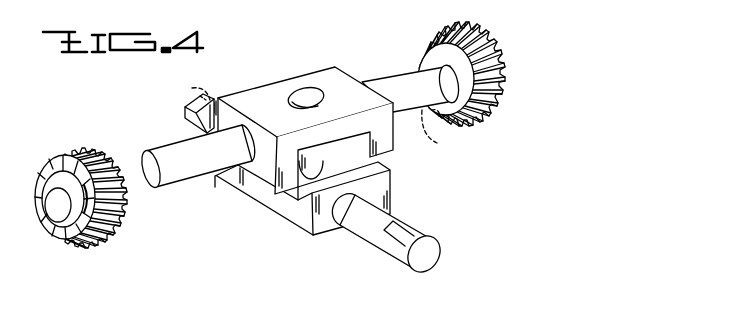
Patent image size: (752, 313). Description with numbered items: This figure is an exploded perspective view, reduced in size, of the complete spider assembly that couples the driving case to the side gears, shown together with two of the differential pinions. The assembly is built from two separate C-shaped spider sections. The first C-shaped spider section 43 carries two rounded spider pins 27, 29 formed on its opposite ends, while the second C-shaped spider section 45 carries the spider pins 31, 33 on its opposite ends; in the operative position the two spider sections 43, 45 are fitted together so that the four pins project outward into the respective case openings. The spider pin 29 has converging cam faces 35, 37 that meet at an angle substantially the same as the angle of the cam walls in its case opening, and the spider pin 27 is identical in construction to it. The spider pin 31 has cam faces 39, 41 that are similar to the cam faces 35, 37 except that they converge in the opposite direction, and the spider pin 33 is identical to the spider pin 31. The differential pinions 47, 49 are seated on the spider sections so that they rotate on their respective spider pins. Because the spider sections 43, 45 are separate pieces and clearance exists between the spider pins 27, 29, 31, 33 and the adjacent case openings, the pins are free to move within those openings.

The spider pin 27 is at (190, 165).
The spider pin 29 is at (400, 70).
The spider pin 31 is at (190, 115).
The spider pin 33 is at (372, 230).
The cam face 35 is at (448, 133).
The cam face 37 is at (461, 133).
The cam face 39 is at (195, 88).
The cam face 41 is at (181, 91).
The C-shaped spider section 43 is at (253, 95).
The second C-shaped spider section 45 is at (273, 203).
The differential pinion 47 is at (102, 237).
The differential pinion 49 is at (467, 33).